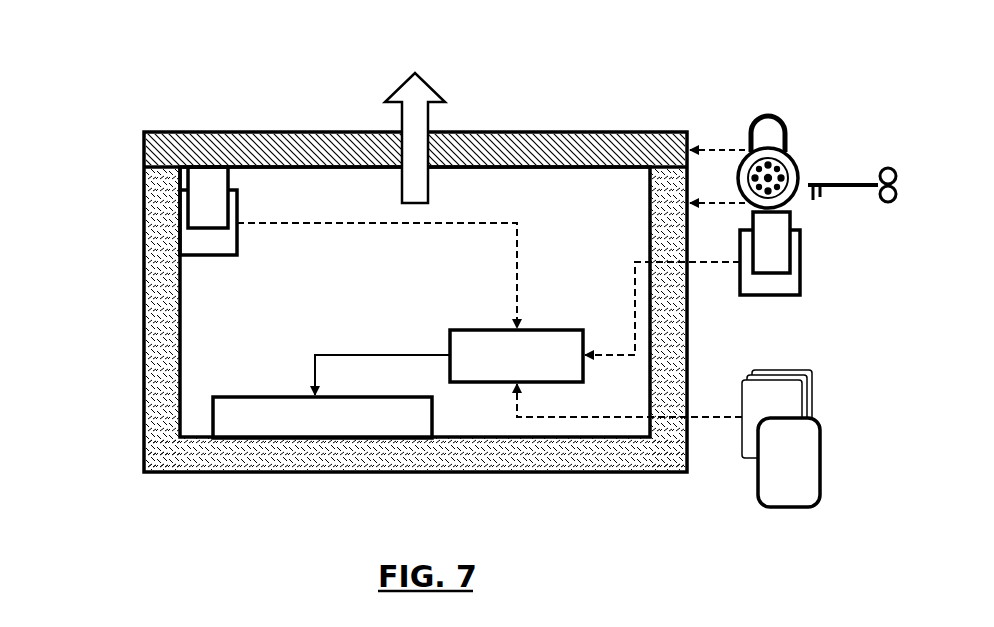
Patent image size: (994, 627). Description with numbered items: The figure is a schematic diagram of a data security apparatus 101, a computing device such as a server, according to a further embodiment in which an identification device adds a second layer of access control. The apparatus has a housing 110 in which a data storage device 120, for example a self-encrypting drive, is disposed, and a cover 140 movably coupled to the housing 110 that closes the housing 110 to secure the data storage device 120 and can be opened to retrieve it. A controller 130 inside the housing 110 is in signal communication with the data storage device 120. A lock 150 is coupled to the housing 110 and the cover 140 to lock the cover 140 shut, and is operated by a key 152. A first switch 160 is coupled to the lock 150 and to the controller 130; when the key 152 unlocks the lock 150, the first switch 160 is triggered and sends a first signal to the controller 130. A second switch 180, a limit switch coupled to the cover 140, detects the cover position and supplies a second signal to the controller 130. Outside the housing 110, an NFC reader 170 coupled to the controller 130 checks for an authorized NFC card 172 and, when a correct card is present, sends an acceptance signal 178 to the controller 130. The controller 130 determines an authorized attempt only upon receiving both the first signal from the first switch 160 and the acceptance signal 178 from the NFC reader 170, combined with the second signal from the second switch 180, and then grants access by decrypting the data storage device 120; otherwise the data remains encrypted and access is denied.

The data security apparatus 101 is at (270, 83).
The housing 110 is at (143, 425).
The data storage device 120 is at (230, 410).
The controller 130 is at (550, 348).
The cover 140 is at (168, 150).
The lock 150 is at (790, 157).
The key 152 is at (840, 182).
The first switch 160 is at (800, 258).
The NFC reader 170 is at (805, 395).
The NFC card 172 is at (822, 472).
The acceptance signal 178 is at (720, 418).
The second switch 180 is at (197, 213).